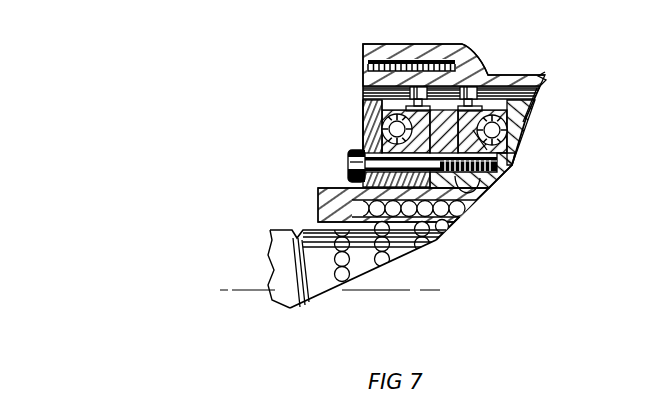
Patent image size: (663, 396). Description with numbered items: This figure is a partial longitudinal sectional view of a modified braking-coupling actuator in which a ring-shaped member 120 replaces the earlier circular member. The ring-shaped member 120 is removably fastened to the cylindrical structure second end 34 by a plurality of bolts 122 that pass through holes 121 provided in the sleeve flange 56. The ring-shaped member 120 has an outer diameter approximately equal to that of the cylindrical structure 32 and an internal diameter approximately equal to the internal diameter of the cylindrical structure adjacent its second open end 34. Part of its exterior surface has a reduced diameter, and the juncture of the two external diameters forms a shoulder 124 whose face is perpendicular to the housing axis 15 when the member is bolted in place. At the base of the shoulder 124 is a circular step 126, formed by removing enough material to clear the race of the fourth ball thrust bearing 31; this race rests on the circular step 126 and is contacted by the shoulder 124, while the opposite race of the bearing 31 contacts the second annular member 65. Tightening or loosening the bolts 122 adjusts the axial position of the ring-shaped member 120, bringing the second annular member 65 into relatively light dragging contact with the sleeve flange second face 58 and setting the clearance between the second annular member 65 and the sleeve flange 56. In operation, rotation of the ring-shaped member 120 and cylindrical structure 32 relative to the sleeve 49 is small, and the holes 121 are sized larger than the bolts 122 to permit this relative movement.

The housing axis 15 is at (246, 290).
The fourth ball thrust bearing 31 is at (410, 122).
The cylindrical structure 32 is at (528, 112).
The cylindrical structure second end 34 is at (475, 193).
The sleeve 49 is at (318, 207).
The sleeve flange 56 is at (441, 130).
The sleeve flange second face 58 is at (372, 152).
The second annular member 65 is at (477, 68).
The ring-shaped member 120 is at (365, 130).
The sleeve flange holes 121 is at (442, 215).
The bolts 122 is at (347, 163).
The shoulder 124 is at (392, 120).
The circular step 126 is at (378, 128).